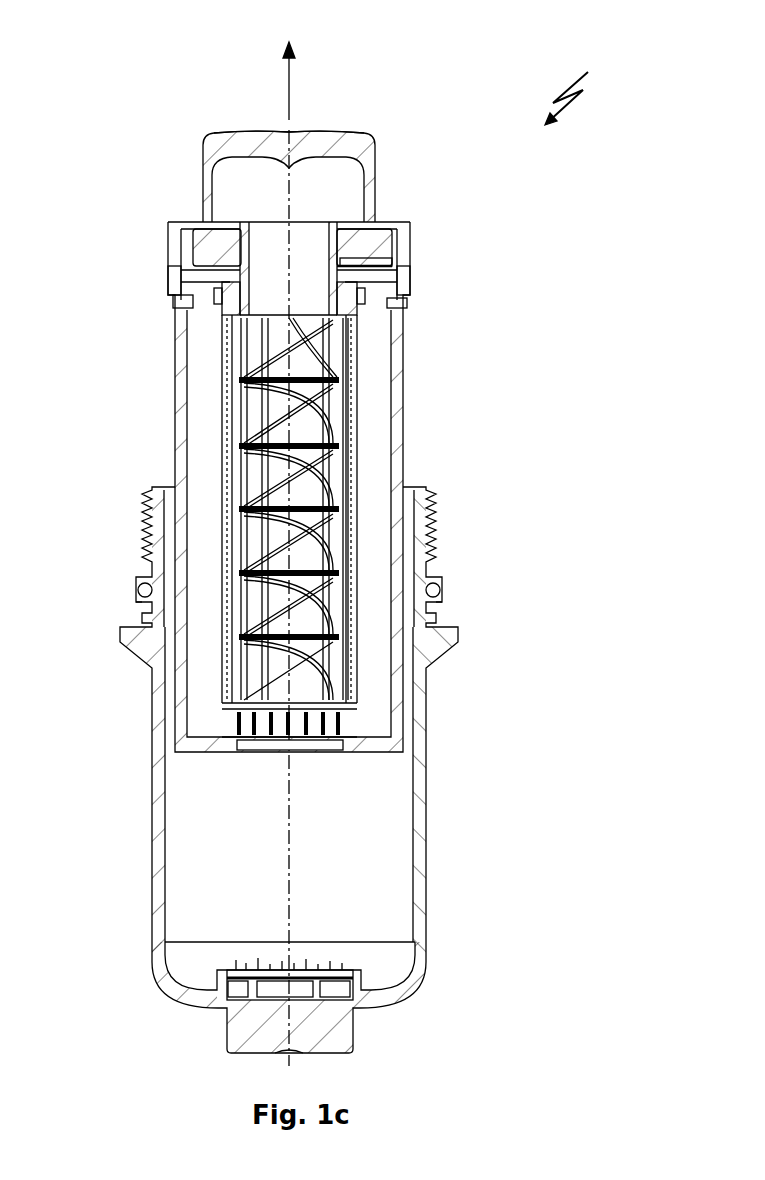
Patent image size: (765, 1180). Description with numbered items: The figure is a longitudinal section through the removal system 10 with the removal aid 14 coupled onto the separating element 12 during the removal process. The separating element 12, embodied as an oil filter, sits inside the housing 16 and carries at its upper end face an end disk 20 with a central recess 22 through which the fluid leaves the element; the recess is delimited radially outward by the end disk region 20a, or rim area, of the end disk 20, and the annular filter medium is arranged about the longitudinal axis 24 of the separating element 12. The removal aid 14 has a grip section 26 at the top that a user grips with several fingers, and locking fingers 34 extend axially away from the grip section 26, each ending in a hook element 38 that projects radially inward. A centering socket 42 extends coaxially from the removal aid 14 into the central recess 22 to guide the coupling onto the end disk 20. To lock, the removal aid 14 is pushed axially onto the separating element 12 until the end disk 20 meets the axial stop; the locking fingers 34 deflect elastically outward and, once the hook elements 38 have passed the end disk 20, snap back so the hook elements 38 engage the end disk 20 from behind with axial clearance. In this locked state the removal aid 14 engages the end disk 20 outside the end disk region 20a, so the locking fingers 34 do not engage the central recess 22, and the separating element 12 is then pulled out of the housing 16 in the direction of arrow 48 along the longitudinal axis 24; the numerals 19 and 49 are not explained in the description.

The removal system 10 is at (589, 92).
The separating element 12 is at (155, 357).
The removal aid 14 is at (395, 158).
The housing 16 is at (157, 792).
The seal arrangement 19 is at (372, 260).
The end disk 20 is at (193, 231).
The end disk region 20a is at (232, 266).
The central recess 22 is at (345, 262).
The longitudinal axis 24 is at (289, 817).
The grip section 26 is at (255, 150).
The locking fingers 34 is at (168, 276).
The hook element 38 is at (407, 305).
The centering socket 42 is at (333, 297).
The arrow 48 is at (291, 73).
The snap connection 49 is at (218, 295).